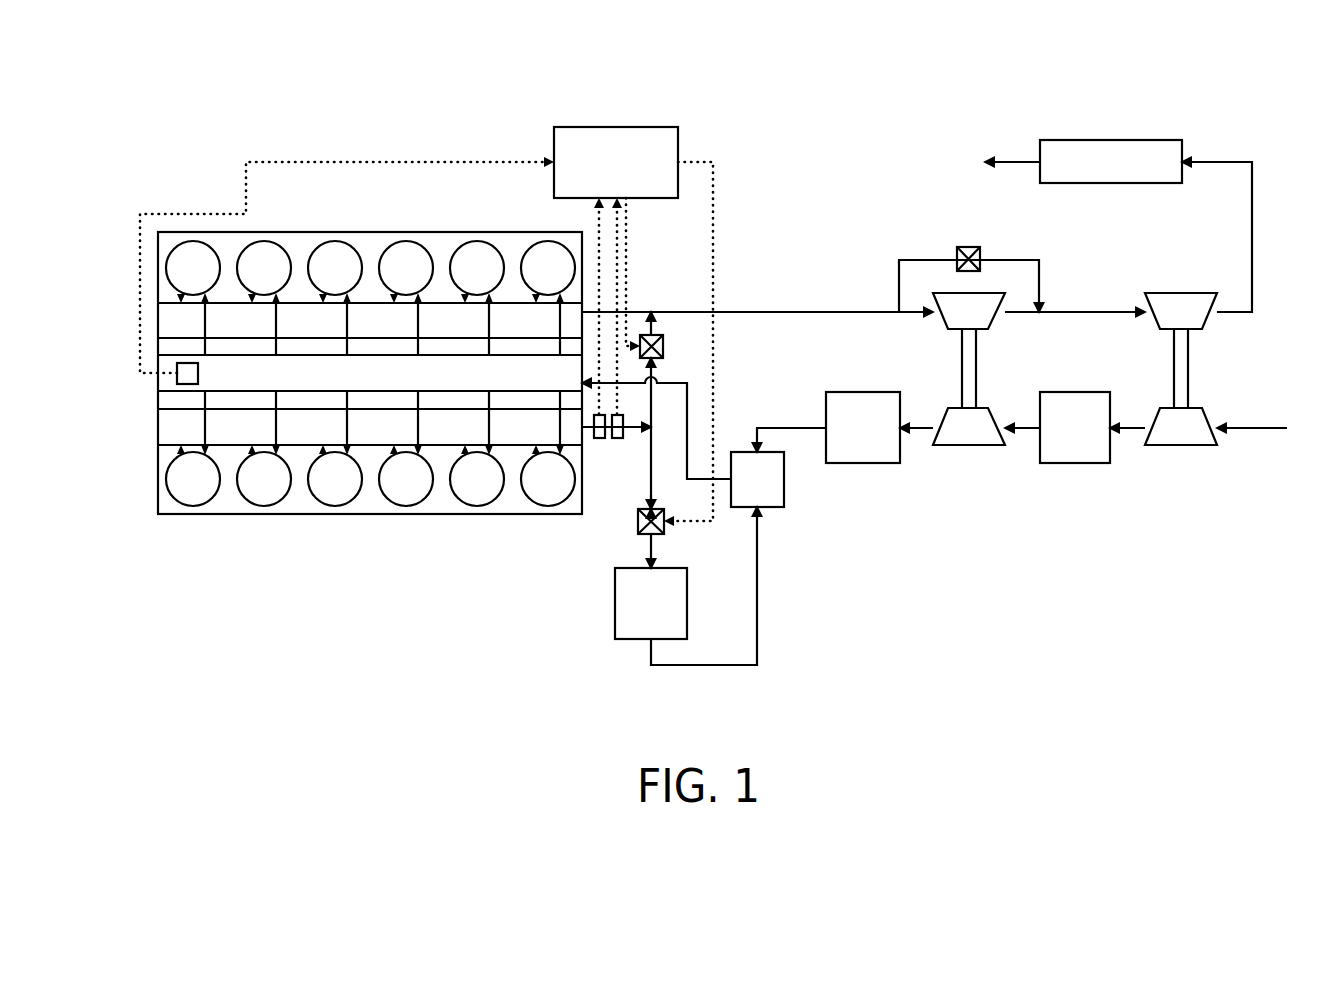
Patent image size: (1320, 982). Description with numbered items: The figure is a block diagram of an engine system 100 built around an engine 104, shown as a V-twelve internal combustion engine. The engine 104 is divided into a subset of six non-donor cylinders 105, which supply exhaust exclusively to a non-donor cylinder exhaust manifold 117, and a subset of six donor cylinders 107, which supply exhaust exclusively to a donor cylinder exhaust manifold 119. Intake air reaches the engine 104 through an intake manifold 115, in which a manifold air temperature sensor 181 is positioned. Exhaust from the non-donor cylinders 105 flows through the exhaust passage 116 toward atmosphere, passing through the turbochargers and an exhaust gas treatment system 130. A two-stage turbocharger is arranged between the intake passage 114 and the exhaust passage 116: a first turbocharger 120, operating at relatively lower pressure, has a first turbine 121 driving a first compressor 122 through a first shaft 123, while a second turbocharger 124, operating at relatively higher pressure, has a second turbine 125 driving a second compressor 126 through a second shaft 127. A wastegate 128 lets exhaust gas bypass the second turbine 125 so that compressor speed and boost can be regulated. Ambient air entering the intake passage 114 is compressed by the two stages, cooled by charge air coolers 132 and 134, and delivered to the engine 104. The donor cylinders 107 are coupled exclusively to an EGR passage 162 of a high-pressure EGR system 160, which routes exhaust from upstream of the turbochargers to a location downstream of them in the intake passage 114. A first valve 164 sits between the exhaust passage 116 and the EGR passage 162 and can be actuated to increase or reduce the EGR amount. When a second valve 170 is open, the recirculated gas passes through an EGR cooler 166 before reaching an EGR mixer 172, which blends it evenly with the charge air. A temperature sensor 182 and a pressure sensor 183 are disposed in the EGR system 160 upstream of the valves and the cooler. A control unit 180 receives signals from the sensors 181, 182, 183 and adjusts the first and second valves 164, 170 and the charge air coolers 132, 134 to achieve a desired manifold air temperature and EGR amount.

The engine system 100 is at (835, 88).
The engine 104 is at (145, 496).
The non-donor cylinders 105 is at (335, 241).
The donor cylinders 107 is at (335, 506).
The intake passage 114 is at (1240, 428).
The intake manifold 115 is at (370, 374).
The exhaust passage 116 is at (745, 312).
The non-donor cylinder exhaust manifold 117 is at (158, 318).
The donor cylinder exhaust manifold 119 is at (158, 423).
The first turbocharger 120 is at (1202, 398).
The first turbine 121 is at (1181, 311).
The first compressor 122 is at (1181, 426).
The first shaft 123 is at (1188, 388).
The second turbocharger 124 is at (989, 398).
The second turbine 125 is at (969, 311).
The second compressor 126 is at (969, 426).
The second shaft 127 is at (976, 388).
The wastegate 128 is at (973, 247).
The exhaust gas treatment system 130 is at (1111, 161).
The charge air cooler 132 is at (1075, 427).
The charge air cooler 134 is at (863, 427).
The EGR system 160 is at (785, 604).
The EGR passage 162 is at (653, 484).
The first valve 164 is at (663, 346).
The EGR cooler 166 is at (651, 603).
The second valve 170 is at (638, 526).
The EGR mixer 172 is at (757, 479).
The control unit 180 is at (616, 162).
The manifold air temperature sensor 181 is at (198, 378).
The temperature sensor 182 is at (599, 440).
The pressure sensor 183 is at (617, 440).